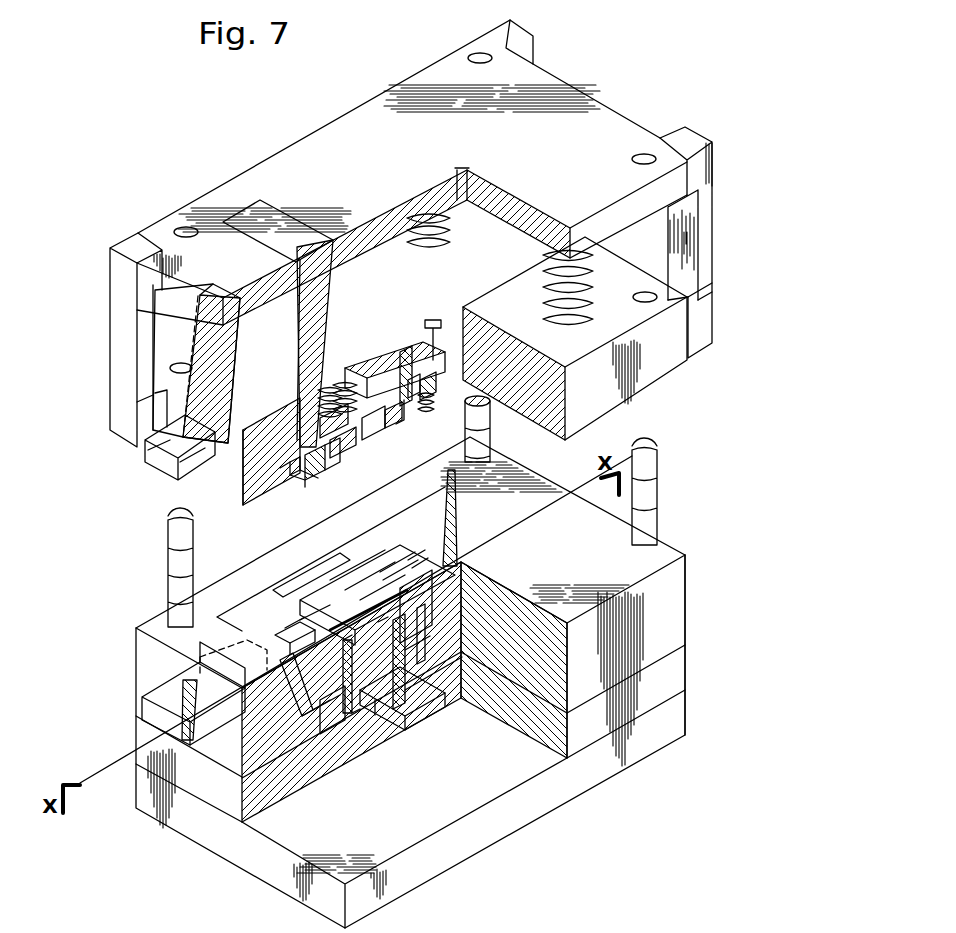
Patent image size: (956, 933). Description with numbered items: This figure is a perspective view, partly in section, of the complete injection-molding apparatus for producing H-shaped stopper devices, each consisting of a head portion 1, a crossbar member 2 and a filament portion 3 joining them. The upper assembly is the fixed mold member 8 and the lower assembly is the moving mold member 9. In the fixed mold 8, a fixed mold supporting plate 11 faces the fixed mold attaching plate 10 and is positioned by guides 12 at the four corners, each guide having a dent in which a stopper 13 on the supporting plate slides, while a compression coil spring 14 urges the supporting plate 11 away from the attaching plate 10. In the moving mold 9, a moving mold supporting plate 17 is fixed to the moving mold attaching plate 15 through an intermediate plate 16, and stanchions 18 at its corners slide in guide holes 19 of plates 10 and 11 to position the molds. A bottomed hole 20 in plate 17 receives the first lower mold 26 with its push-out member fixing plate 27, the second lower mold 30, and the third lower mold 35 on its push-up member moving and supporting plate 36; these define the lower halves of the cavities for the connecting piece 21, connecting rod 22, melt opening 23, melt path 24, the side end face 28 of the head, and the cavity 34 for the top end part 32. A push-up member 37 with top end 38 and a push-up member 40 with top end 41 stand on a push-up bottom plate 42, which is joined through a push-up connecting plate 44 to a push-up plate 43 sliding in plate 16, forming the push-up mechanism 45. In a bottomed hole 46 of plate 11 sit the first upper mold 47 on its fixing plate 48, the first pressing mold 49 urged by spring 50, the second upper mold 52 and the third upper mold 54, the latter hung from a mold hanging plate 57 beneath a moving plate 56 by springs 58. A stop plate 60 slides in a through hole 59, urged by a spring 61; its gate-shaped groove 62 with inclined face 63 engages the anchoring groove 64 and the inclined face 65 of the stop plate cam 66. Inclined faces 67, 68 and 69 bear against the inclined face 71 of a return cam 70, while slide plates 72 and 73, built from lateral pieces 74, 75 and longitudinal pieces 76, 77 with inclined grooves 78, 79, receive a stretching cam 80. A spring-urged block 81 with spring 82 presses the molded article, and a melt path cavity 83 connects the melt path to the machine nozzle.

The head portion 1 is at (354, 637).
The crossbar member 2 is at (428, 598).
The filament portion 3 is at (381, 633).
The fixed mold member 8 is at (310, 121).
The moving mold member 9 is at (700, 628).
The fixed mold attaching plate 10 is at (615, 125).
The fixed mold supporting plate 11 is at (680, 372).
The guides 12 is at (523, 34).
The stopper 13 is at (696, 320).
The compression coil spring 14 is at (448, 240).
The moving mold attaching plate 15 is at (683, 715).
The intermediate plate 16 is at (683, 665).
The moving mold supporting plate 17 is at (680, 600).
The stanchions 18 is at (165, 568).
The guide holes 19 is at (478, 55).
The bottomed hole 20 is at (300, 580).
The connecting piece 21 is at (380, 598).
The connecting rod 22 is at (423, 552).
The melt opening 23 is at (382, 590).
The melt path 24 is at (400, 560).
The first lower mold 26 is at (415, 615).
The push-out member fixing plate 27 is at (420, 646).
The side end face 28 is at (340, 575).
The second lower mold 30 is at (365, 580).
The top end part 32 is at (325, 617).
The cavity 34 is at (290, 588).
The third lower mold 35 is at (302, 712).
The push-up member moving and supporting plate 36 is at (316, 716).
The push-up member 37 is at (436, 680).
The top end 38 is at (420, 630).
The push-up member 40 is at (326, 716).
The top end 41 is at (353, 662).
The push-up bottom plate 42 is at (400, 718).
The push-up plate 43 is at (420, 720).
The push-up connecting plate 44 is at (432, 712).
The push-up mechanism 45 is at (380, 727).
The bottomed hole 46 is at (380, 360).
The first upper mold 47 is at (392, 428).
The fixing plate 48 is at (405, 348).
The first pressing mold 49 is at (406, 418).
The spring 50 is at (423, 410).
The second upper mold 52 is at (374, 436).
The third upper mold 54 is at (348, 450).
The moving plate 56 is at (326, 388).
The mold hanging plate 57 is at (348, 420).
The springs 58 is at (345, 382).
The through hole 59 is at (292, 476).
The stop plate 60 is at (318, 472).
The spring 61 is at (338, 464).
The gate-shaped groove 62 is at (302, 488).
The inclined face 63 is at (312, 480).
The anchoring groove 64 is at (290, 645).
The inclined face 65 is at (290, 624).
The stop plate cam 66 is at (278, 636).
The inclined face 67 is at (271, 451).
The inclined face 68 is at (283, 473).
The inclined face 69 is at (290, 680).
The return cam 70 is at (325, 310).
The inclined face 71 is at (322, 332).
The slide plate 72 is at (160, 465).
The slide plate 73 is at (145, 712).
The lateral piece 74 is at (145, 455).
The lateral piece 75 is at (168, 690).
The longitudinal piece 76 is at (185, 470).
The longitudinal piece 77 is at (150, 735).
The inclined groove 78 is at (190, 370).
The inclined groove 79 is at (165, 668).
The stretching cam 80 is at (165, 380).
The block 81 is at (433, 400).
The spring 82 is at (440, 375).
The melt path cavity 83 is at (455, 185).